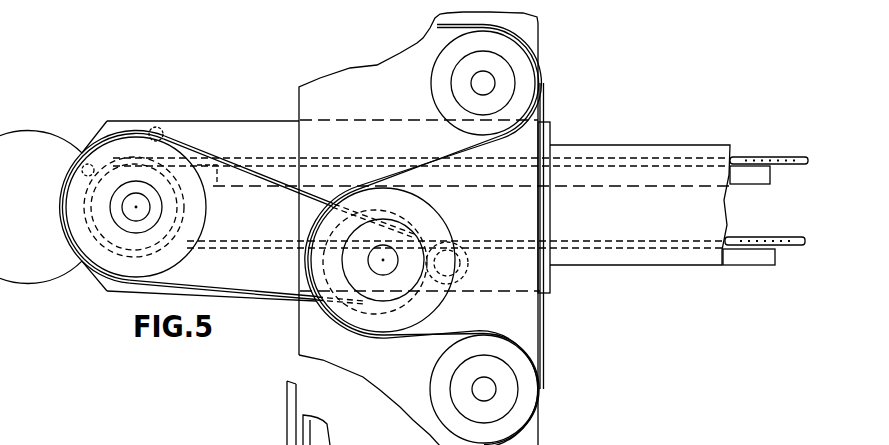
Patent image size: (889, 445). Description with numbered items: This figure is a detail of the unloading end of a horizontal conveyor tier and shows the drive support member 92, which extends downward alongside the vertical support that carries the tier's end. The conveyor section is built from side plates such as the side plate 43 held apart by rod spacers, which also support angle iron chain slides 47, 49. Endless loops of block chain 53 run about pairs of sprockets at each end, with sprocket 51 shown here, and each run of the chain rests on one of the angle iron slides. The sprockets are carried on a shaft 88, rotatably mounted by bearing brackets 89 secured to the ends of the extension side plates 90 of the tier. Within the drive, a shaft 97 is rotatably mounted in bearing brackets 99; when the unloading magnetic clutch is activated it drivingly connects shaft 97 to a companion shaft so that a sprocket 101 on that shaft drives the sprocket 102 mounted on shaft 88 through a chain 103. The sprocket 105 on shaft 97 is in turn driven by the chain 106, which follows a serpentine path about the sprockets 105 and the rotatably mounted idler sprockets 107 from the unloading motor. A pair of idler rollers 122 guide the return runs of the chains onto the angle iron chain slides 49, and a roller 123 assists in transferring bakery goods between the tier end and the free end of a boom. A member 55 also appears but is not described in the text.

The side plate 43 is at (796, 436).
The angle iron chain slide 47 is at (510, 185).
The angle iron chain slide 49 is at (575, 249).
The sprocket 51 is at (183, 228).
The block chain 53 is at (274, 157).
The support member 55 is at (752, 436).
The shaft 88 is at (150, 207).
The bearing bracket 89 is at (96, 281).
The extension side plate 90 is at (216, 120).
The drive support member 92 is at (539, 325).
The shaft 97 is at (392, 255).
The bearing bracket 99 is at (300, 310).
The sprocket 101 is at (400, 218).
The sprocket 102 is at (66, 206).
The chain 103 is at (263, 290).
The sprocket 105 is at (433, 311).
The chain 106 is at (436, 30).
The idler sprocket 107 is at (432, 88).
The idler roller 122 is at (462, 270).
The roller 123 is at (82, 163).